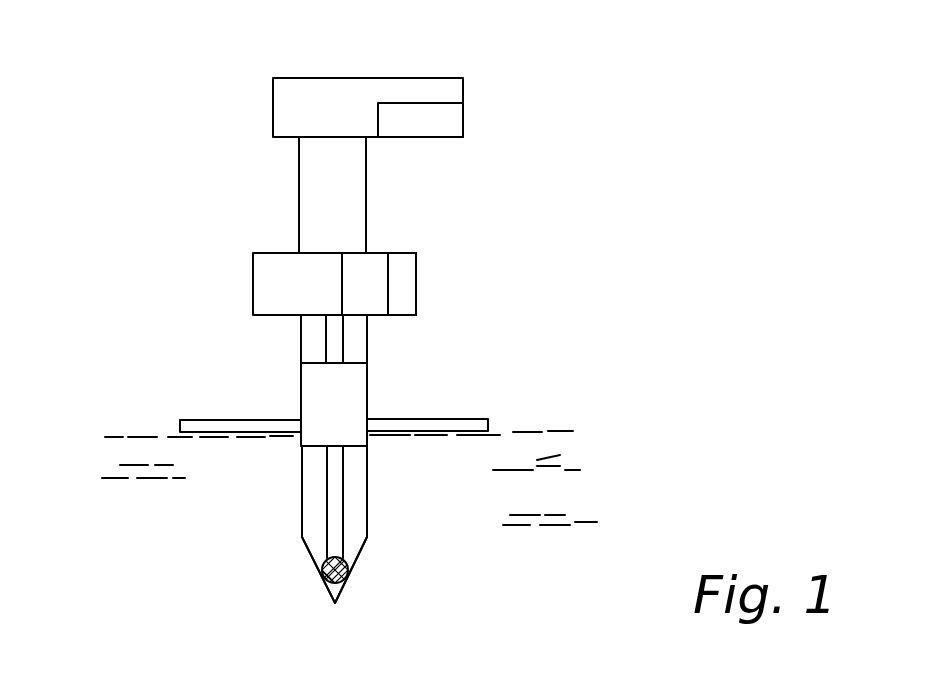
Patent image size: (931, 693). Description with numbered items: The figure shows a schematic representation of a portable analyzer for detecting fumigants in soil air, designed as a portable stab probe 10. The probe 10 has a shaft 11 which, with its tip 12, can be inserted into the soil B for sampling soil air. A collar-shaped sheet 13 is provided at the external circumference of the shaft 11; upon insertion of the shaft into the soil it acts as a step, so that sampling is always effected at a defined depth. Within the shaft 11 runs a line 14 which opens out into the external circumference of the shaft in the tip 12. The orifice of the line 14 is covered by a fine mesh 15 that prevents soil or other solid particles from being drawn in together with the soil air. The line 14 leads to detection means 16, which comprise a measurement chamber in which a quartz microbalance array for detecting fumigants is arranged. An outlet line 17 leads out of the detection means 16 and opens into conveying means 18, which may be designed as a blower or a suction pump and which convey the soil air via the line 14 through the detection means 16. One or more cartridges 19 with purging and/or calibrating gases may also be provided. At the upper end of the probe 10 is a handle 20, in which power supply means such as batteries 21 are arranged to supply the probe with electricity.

The stab probe 10 is at (145, 105).
The shaft 11 is at (302, 492).
The tip 12 is at (308, 555).
The collar-shaped sheet 13 is at (460, 423).
The line 14 is at (335, 503).
The fine mesh 15 is at (348, 568).
The detection means 16 is at (327, 393).
The outlet line 17 is at (343, 337).
The conveying means 18 is at (275, 290).
The cartridges 19 is at (405, 277).
The handle 20 is at (338, 98).
The batteries 21 is at (425, 123).
The soil B is at (565, 450).